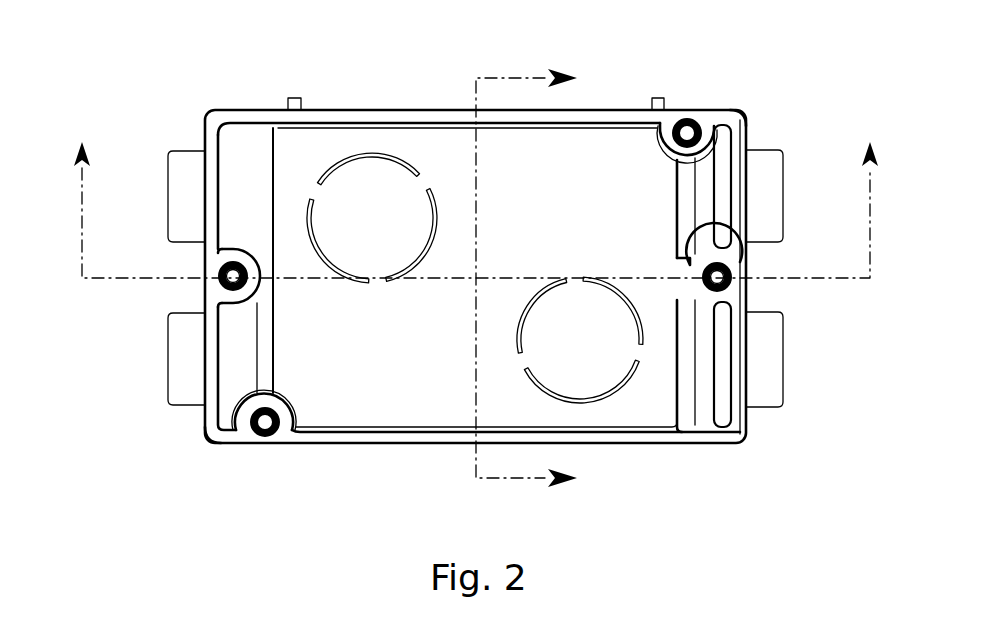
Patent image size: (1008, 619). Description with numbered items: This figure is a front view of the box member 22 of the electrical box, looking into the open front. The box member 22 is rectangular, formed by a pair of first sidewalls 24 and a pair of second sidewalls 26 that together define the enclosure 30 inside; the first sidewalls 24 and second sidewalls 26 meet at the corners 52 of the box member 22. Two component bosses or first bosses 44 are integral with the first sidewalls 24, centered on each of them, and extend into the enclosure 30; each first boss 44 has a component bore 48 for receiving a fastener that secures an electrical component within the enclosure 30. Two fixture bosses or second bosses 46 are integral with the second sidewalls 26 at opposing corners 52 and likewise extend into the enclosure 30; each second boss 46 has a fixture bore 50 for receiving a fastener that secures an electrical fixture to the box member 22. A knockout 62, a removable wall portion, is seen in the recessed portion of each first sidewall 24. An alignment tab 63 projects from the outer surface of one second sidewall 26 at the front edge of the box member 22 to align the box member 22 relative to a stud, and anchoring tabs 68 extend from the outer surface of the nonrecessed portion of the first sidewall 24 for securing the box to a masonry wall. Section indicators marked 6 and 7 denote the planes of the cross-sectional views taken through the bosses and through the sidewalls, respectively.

The box member 22 is at (165, 103).
The first sidewalls 24 is at (213, 327).
The second sidewalls 26 is at (365, 120).
The enclosure 30 is at (587, 157).
The first bosses 44 is at (245, 295).
The second bosses 46 is at (662, 152).
The component bores 48 is at (228, 276).
The fixture bores 50 is at (688, 128).
The corners 52 is at (742, 112).
The knockout 62 is at (388, 222).
The alignment tab 63 is at (295, 98).
The anchoring tabs 68 is at (772, 342).
The section line 6- 6 is at (479, 210).
The section line 7- 7 is at (526, 280).